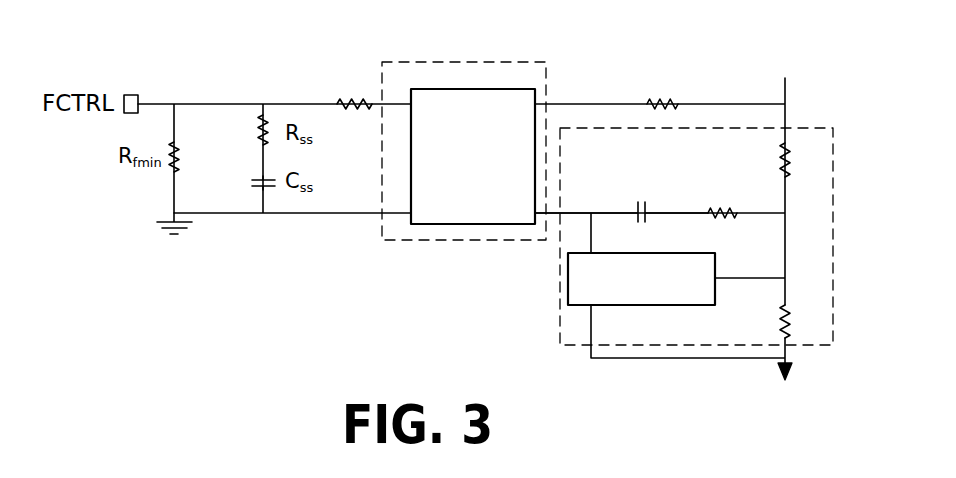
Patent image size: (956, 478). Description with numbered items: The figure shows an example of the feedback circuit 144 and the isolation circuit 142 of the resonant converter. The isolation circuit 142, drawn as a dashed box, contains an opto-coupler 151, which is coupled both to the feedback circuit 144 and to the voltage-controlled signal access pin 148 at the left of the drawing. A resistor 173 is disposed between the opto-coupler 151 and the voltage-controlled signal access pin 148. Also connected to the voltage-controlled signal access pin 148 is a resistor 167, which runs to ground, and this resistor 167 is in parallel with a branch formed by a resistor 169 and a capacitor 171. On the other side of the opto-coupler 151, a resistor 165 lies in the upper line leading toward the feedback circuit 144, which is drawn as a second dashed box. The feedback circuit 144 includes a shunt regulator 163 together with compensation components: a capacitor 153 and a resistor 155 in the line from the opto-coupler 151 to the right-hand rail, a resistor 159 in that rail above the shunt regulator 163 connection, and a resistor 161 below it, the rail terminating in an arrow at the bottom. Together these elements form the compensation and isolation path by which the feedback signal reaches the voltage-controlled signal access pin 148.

The isolation circuit 142 is at (480, 62).
The feedback circuit 144 is at (815, 128).
The voltage-controlled signal access pin 148 is at (132, 93).
The opto-coupler 151 is at (513, 89).
The capacitor 153 is at (645, 205).
The resistor 155 is at (727, 208).
The resistor 159 is at (787, 170).
The resistor 161 is at (787, 308).
The shunt regulator 163 is at (683, 305).
The resistor 165 is at (673, 100).
The resistor (Rfmin) 167 is at (172, 168).
The resistor (Rss) 169 is at (260, 140).
The capacitor (Css) 171 is at (251, 187).
The resistor 173 is at (344, 98).